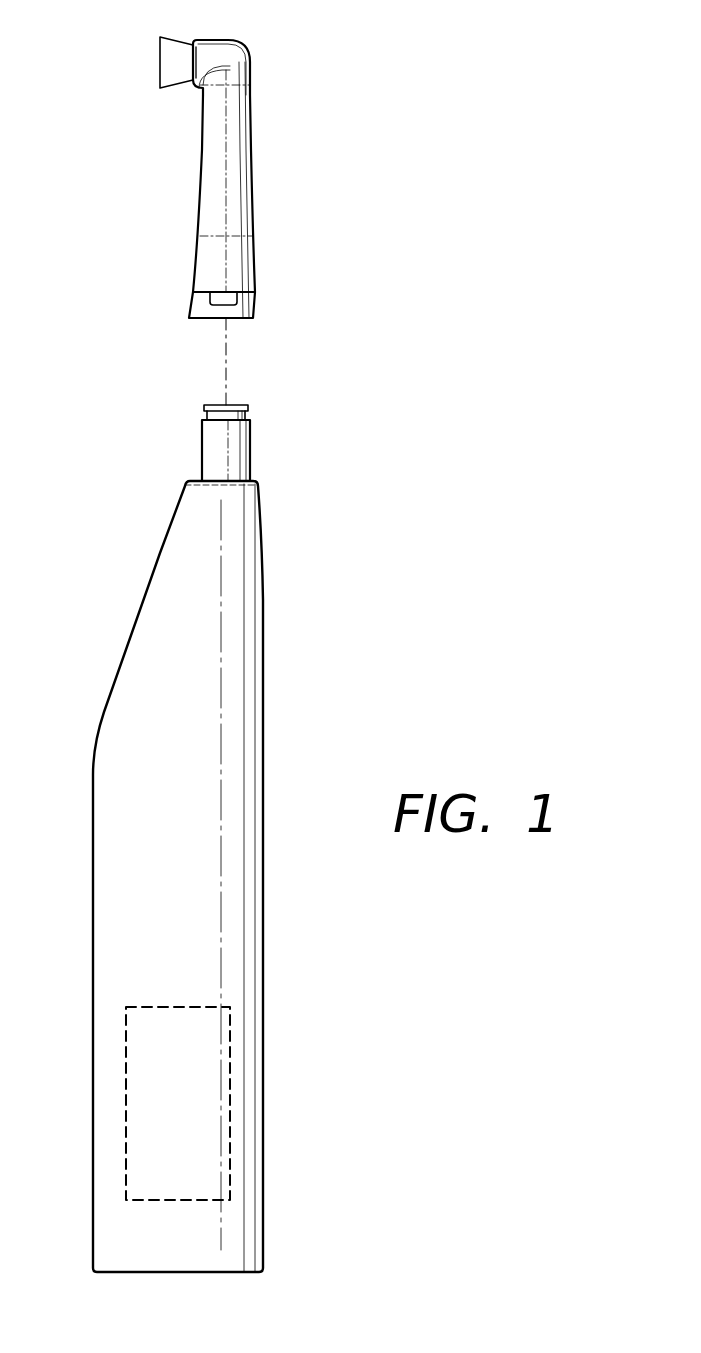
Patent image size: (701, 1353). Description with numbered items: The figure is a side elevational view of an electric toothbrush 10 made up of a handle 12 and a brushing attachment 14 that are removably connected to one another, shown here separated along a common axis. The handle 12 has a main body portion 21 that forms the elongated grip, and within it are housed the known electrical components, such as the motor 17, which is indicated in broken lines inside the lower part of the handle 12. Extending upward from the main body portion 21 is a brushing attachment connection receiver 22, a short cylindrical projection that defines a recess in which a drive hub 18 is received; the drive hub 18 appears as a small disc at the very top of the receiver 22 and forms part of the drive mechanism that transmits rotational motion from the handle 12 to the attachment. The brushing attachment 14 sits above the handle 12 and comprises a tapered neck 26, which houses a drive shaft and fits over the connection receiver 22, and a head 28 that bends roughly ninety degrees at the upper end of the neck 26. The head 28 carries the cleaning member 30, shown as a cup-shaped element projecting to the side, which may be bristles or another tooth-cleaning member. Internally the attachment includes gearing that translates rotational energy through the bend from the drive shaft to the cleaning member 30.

The electric toothbrush 10 is at (440, 247).
The handle 12 is at (392, 497).
The brushing attachment 14 is at (152, 223).
The motor 17 is at (230, 1103).
The drive hub 18 is at (248, 408).
The main body portion 21 is at (263, 696).
The brushing attachment connection receiver 22 is at (202, 450).
The neck 26 is at (236, 140).
The head 28 is at (222, 50).
The cleaning member 30 is at (160, 63).